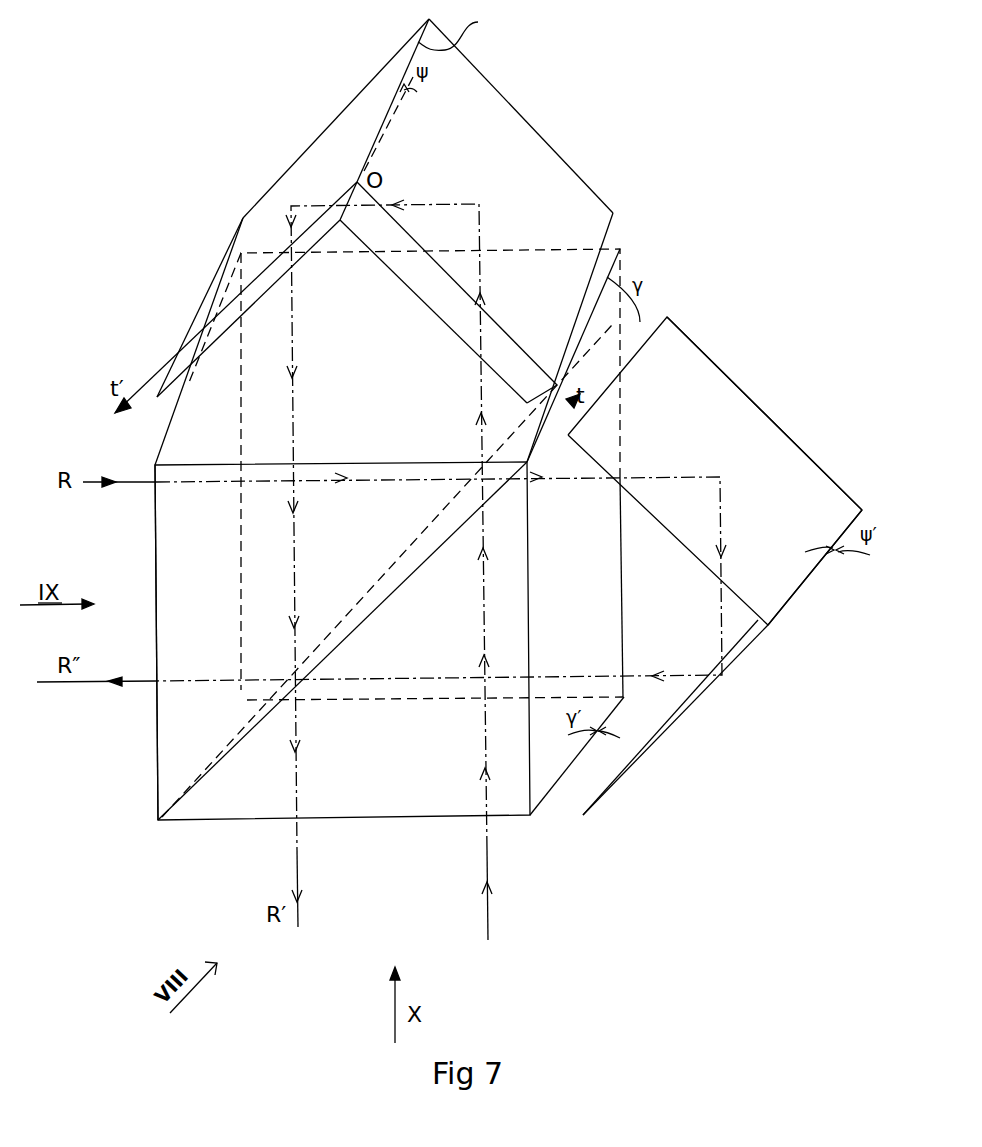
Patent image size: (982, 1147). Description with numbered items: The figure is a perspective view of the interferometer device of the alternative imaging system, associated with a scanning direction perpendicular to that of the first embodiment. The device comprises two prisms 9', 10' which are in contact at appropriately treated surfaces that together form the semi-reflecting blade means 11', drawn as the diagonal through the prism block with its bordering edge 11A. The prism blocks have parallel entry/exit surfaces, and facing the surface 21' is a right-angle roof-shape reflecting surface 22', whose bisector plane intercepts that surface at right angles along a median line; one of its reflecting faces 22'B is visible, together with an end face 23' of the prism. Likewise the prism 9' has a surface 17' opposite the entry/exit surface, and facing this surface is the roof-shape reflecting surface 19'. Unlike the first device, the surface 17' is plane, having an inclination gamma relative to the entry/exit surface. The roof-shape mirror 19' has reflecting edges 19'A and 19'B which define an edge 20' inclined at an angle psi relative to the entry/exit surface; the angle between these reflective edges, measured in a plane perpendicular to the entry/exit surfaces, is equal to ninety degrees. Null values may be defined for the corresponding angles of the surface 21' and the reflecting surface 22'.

The prism 10' is at (342, 669).
The prism 9' is at (121, 642).
The semi-reflecting blade means 11' is at (342, 641).
The edge 11A is at (205, 762).
The surface 17' is at (405, 474).
The roof-shape reflecting surface 19' is at (437, 235).
The reflecting edge 19'A is at (325, 118).
The reflecting edge 19'B is at (529, 116).
The edge 20' is at (468, 28).
The surface 21' is at (577, 776).
The right-angle roof-shape reflecting surface 22' is at (716, 566).
The reflecting edge of roof-shape reflecting surface 22'B is at (722, 566).
The end face of second prism 23' is at (816, 583).